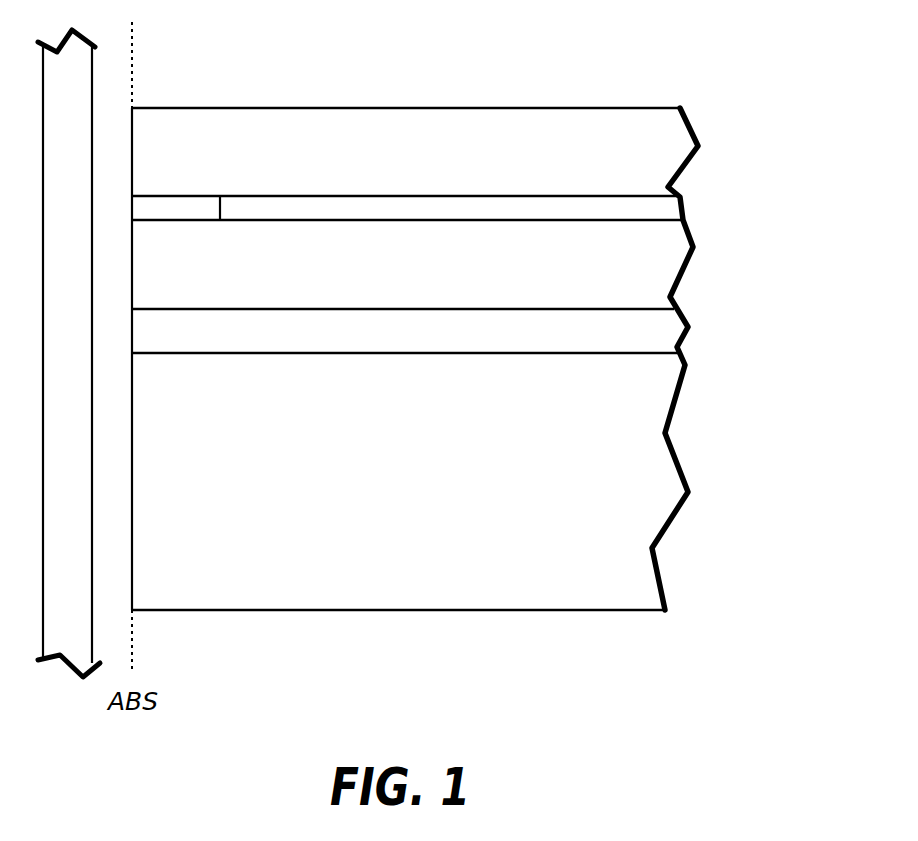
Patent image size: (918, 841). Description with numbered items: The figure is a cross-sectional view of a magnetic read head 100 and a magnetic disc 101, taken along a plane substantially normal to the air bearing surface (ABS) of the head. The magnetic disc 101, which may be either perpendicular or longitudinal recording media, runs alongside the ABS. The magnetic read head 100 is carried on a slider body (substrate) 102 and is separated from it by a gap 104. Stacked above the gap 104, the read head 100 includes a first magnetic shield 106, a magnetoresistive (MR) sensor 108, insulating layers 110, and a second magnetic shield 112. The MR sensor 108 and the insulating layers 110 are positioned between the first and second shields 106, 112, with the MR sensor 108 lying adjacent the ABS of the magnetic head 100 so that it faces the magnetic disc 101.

The magnetic read head 100 is at (472, 318).
The magnetic disc 101 is at (86, 260).
The slider body (substrate) 102 is at (222, 489).
The gap 104 is at (250, 344).
The first magnetic shield 106 is at (251, 275).
The magnetoresistive (MR) sensor 108 is at (170, 210).
The insulating layers 110 is at (323, 207).
The second magnetic shield 112 is at (220, 162).